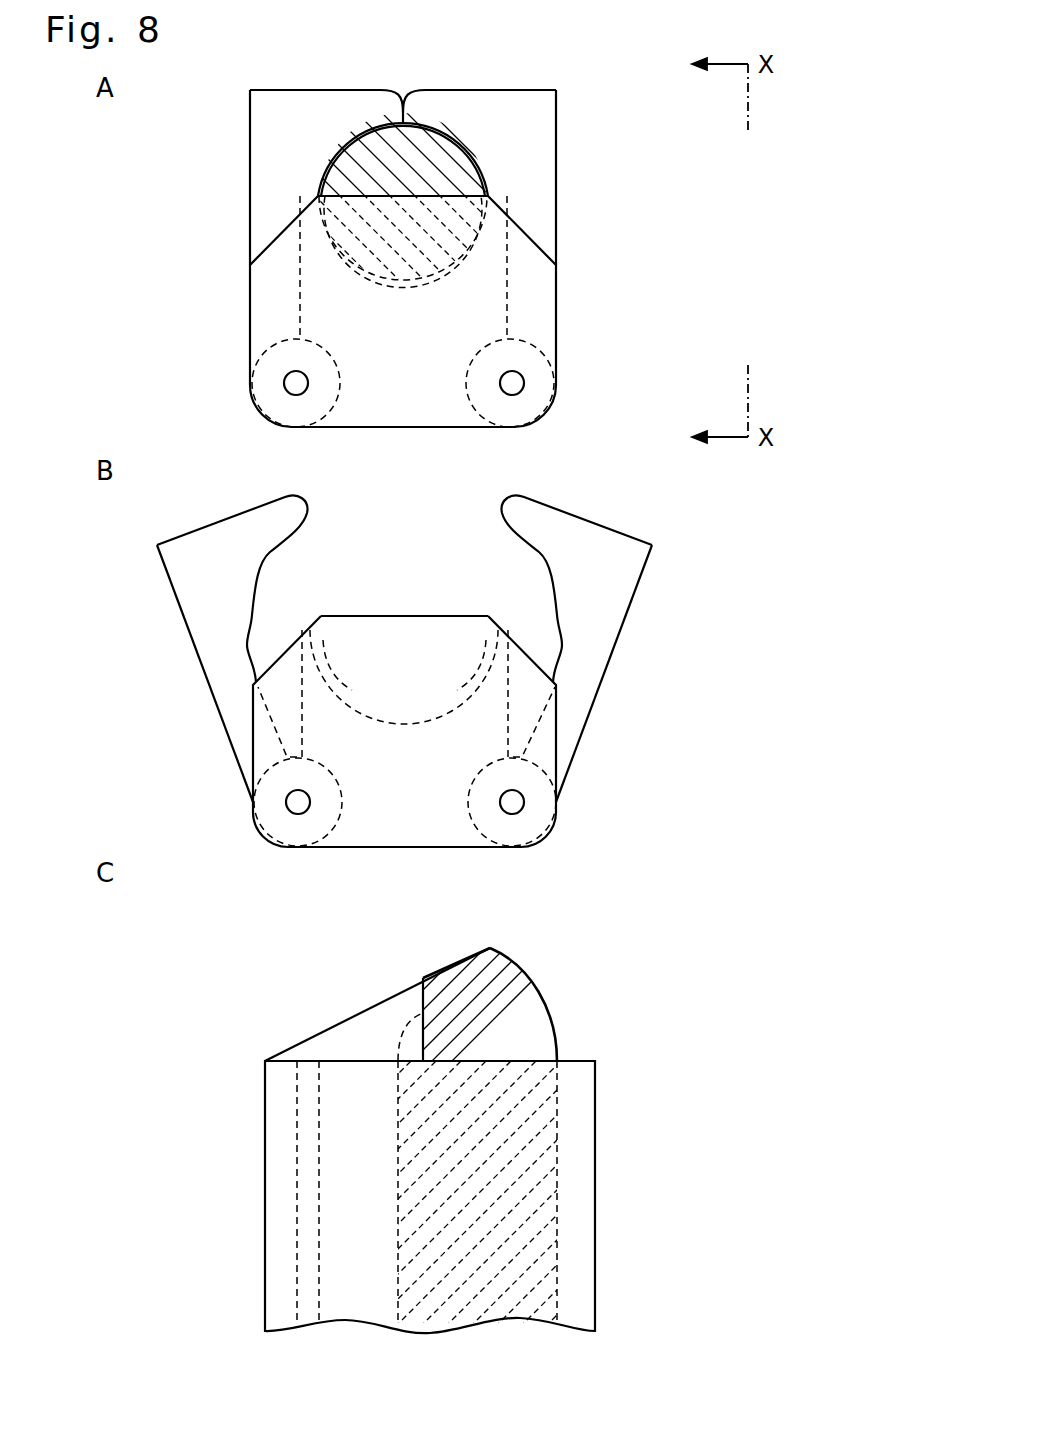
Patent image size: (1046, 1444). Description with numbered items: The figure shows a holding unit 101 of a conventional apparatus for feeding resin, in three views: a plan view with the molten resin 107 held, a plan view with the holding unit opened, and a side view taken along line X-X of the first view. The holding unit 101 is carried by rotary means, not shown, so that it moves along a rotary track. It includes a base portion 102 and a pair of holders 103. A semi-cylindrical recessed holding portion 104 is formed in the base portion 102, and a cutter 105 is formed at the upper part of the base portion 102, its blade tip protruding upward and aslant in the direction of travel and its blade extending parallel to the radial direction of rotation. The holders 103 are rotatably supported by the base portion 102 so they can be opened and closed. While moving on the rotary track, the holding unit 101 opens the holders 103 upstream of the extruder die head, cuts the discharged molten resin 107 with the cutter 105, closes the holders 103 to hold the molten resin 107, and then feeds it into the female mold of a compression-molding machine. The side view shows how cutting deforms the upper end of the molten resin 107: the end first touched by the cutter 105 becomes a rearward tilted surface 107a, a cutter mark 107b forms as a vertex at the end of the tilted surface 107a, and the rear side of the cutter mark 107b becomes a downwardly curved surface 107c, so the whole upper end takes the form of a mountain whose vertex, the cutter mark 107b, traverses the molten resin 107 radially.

The holding unit 101 is at (572, 102).
The base portion 102 is at (507, 298).
The holders 103 is at (275, 155).
The recessed holding portion 104 is at (337, 253).
The cutter 105 is at (427, 196).
The molten resin 107 is at (368, 148).
The tilted surface 107a is at (450, 990).
The cutter mark 107b is at (493, 952).
The downwardly curved surface 107c is at (557, 1043).